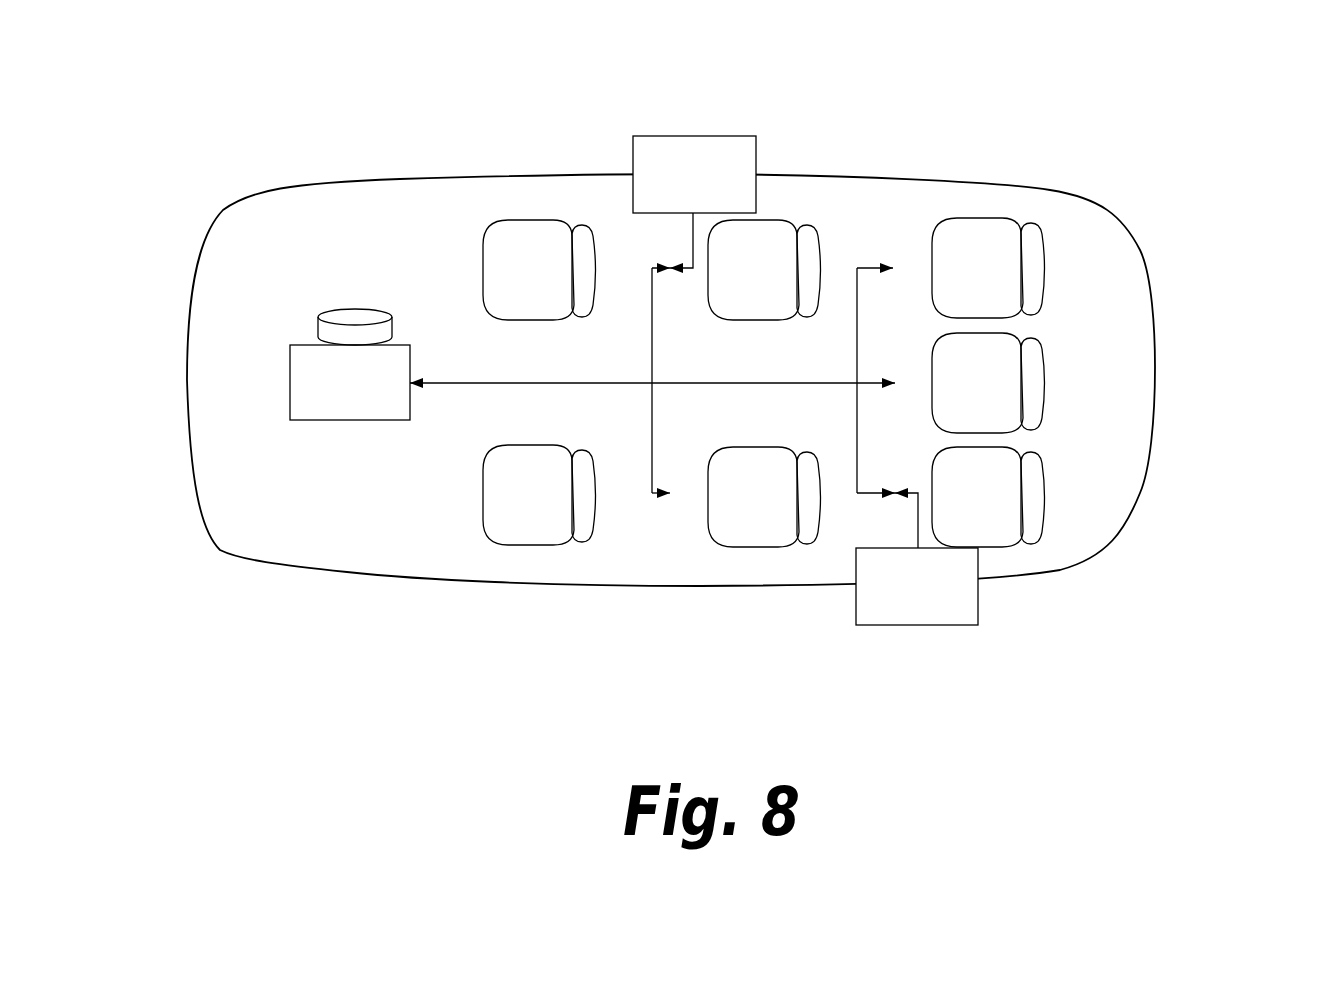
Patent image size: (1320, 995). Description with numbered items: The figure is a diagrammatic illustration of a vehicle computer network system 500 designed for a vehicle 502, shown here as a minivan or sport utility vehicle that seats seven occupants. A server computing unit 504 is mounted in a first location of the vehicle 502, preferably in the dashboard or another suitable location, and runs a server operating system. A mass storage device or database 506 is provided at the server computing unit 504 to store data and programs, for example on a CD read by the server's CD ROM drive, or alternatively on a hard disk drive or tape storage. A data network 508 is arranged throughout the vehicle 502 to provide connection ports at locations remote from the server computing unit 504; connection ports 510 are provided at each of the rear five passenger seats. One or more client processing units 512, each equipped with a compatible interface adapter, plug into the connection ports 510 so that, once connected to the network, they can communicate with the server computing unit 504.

The vehicle computer network system 500 is at (933, 96).
The vehicle 502 is at (1155, 365).
The server computing unit 504 is at (350, 420).
The mass storage device or database 506 is at (353, 317).
The data network 508 is at (708, 383).
The connection ports 510 is at (893, 268).
The client processing units 512 is at (695, 136).